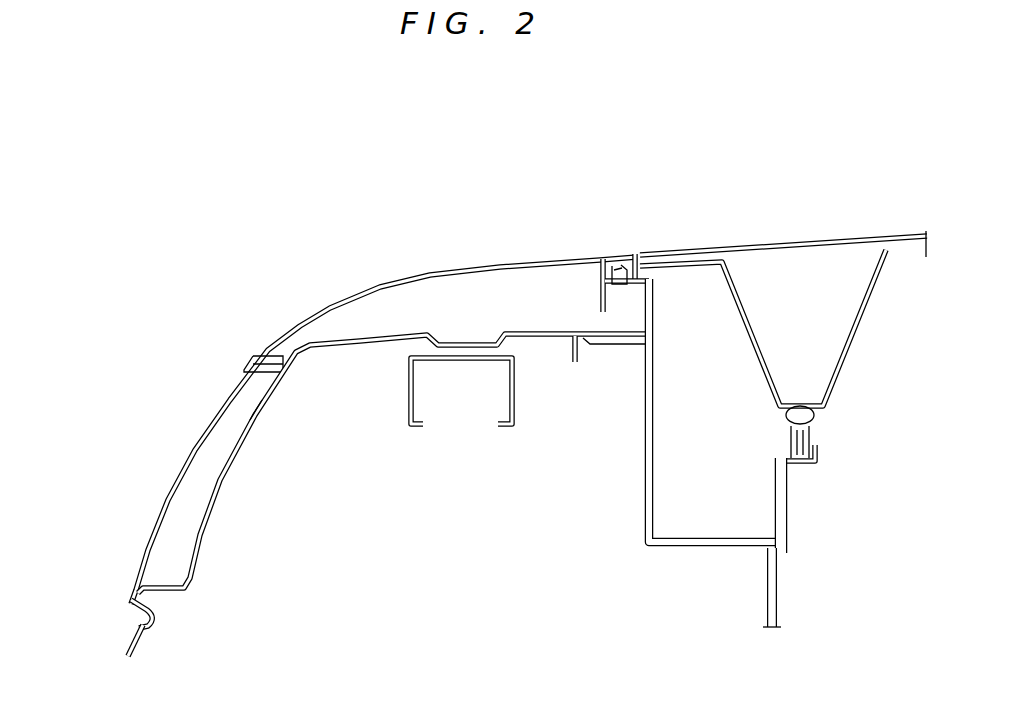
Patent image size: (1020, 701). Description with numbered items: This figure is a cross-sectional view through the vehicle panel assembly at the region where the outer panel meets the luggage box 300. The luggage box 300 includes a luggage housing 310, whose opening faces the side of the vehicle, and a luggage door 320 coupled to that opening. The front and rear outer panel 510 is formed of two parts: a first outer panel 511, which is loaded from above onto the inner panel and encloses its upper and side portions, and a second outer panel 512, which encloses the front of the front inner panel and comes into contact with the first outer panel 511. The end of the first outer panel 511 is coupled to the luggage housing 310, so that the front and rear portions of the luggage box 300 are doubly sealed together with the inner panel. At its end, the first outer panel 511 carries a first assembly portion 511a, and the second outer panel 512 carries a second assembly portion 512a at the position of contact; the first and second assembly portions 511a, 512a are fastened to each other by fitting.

The luggage box 300 is at (698, 360).
The luggage housing 310 is at (645, 478).
The luggage door 320 is at (783, 243).
The front and rear outer panel 510 is at (346, 401).
The first outer panel 511 is at (388, 401).
The first assembly portion 511a is at (283, 340).
The second outer panel 512 is at (344, 463).
The second assembly portion 512a is at (278, 392).